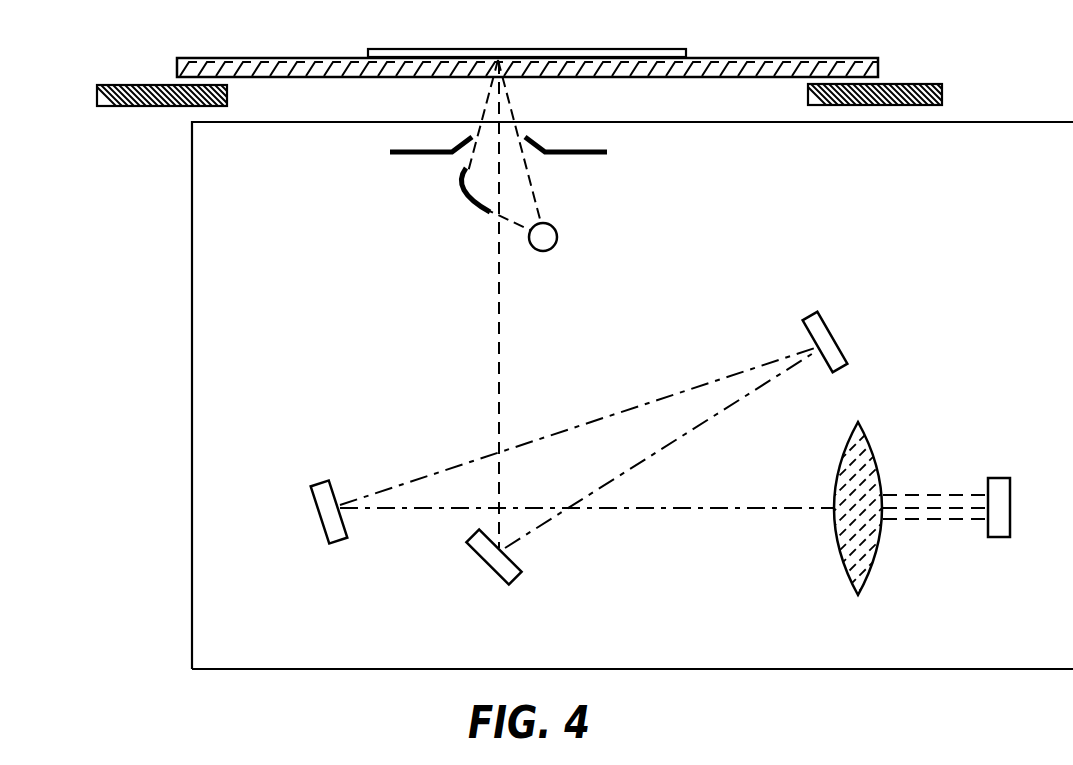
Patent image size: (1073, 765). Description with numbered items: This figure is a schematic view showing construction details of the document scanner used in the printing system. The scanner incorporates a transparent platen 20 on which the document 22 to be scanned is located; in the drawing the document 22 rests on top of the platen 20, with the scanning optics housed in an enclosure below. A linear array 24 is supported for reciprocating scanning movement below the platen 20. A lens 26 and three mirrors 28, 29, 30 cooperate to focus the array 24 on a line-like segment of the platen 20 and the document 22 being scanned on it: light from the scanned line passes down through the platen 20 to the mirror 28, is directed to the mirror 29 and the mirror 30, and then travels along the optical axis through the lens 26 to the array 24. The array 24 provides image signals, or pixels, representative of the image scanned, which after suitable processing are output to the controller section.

The transparent platen 20 is at (292, 79).
The document 22 is at (578, 50).
The linear array 24 is at (998, 478).
The lens 26 is at (873, 567).
The mirror 28 is at (497, 573).
The mirror 29 is at (835, 335).
The mirror 30 is at (323, 527).